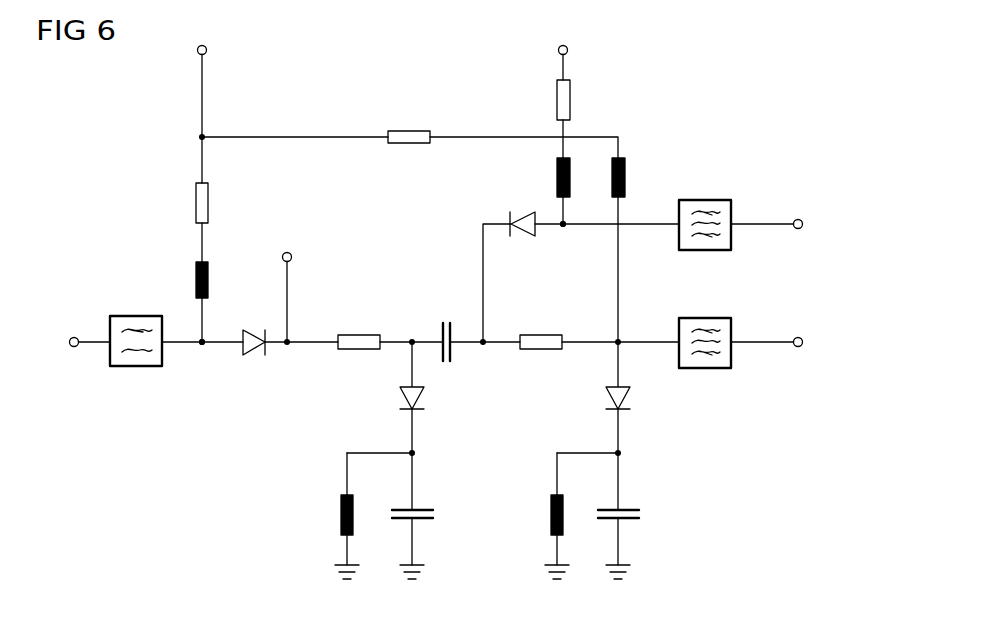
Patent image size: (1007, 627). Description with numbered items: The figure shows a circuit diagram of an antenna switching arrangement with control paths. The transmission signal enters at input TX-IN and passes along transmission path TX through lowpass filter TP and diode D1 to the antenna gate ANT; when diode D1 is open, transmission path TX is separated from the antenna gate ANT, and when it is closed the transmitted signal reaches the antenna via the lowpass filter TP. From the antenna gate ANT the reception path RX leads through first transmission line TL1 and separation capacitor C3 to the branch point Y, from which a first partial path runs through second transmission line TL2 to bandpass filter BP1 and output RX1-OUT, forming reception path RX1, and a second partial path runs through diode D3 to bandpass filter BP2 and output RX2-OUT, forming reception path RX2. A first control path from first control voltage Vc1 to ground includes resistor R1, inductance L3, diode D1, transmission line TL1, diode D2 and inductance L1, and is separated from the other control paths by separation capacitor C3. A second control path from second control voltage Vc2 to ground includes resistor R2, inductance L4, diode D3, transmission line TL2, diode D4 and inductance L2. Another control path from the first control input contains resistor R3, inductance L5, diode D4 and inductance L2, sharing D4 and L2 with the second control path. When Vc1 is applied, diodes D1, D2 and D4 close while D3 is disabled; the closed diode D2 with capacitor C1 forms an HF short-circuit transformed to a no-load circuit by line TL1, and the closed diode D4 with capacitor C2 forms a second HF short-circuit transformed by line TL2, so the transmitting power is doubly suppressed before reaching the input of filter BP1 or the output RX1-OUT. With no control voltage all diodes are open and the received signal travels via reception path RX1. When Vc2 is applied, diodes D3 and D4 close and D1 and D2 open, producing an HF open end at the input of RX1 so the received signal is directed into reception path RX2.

The first control voltage Vc1 is at (202, 99).
The second control voltage Vc2 is at (564, 48).
The resistor R1 is at (196, 205).
The resistor R2 is at (557, 100).
The resistor R3 is at (410, 131).
The inductance L1 is at (341, 516).
The inductance L2 is at (551, 516).
The inductance L3 is at (196, 284).
The inductance L4 is at (557, 178).
The inductance L5 is at (625, 178).
The capacitor C1 is at (421, 507).
The capacitor C2 is at (630, 507).
The separation capacitor C3 is at (445, 322).
The diode D1 is at (257, 352).
The diode D2 is at (425, 400).
The diode D3 is at (514, 238).
The diode D4 is at (607, 400).
The first transmission line TL1 is at (358, 334).
The second transmission line TL2 is at (545, 334).
The lowpass filter TP is at (135, 366).
The bandpass filter BP1 is at (705, 368).
The bandpass filter BP2 is at (705, 250).
The transmission input TX-IN is at (74, 337).
The transmission path TX is at (182, 343).
The reception path RX is at (313, 343).
The antenna gate ANT is at (287, 252).
The branch point Y is at (486, 350).
The reception path RX1 is at (643, 338).
The reception path RX2 is at (585, 226).
The output of the first partial path RX1-OUT is at (806, 314).
The output of the second partial path RX2-OUT is at (798, 219).